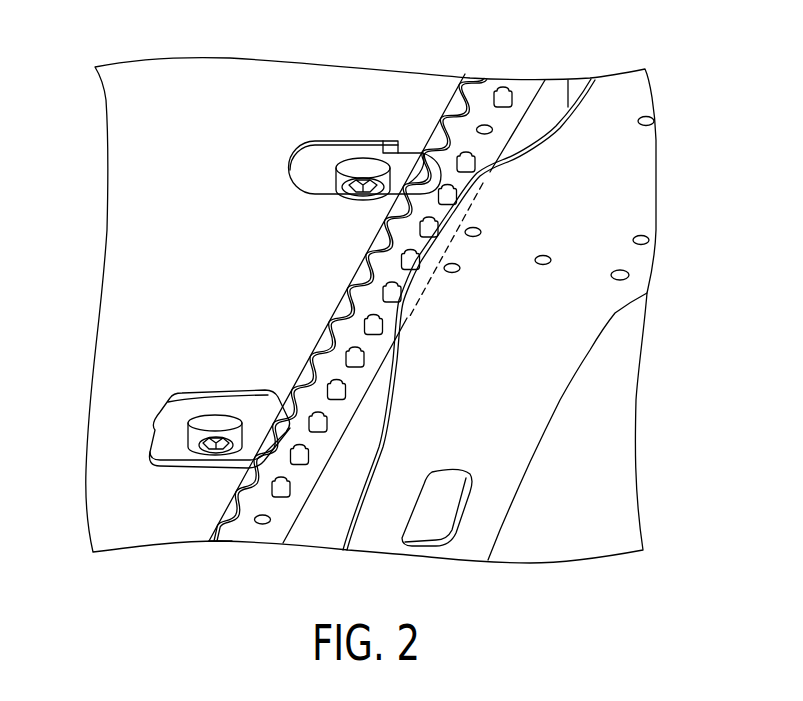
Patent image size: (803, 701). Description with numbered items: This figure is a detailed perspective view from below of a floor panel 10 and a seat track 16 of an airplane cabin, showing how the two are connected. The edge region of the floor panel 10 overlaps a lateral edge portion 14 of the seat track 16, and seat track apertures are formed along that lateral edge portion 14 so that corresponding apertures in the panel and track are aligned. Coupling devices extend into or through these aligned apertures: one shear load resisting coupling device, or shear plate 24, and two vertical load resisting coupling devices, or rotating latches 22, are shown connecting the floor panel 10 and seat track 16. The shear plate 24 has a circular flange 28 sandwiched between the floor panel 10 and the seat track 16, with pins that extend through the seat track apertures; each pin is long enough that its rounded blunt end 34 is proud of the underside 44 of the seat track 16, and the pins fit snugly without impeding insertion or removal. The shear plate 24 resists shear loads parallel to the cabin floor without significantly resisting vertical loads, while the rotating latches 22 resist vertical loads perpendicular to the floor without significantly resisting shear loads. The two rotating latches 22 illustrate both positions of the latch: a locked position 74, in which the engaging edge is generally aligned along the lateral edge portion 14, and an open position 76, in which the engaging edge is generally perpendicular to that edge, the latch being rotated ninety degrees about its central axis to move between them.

The floor panel 10 is at (172, 85).
The lateral edge portion 14 is at (260, 537).
The seat track 16 is at (536, 433).
The vertical load resisting coupling device 22 is at (262, 170).
The shear load resisting coupling device 24 is at (308, 324).
The circular flange 28 is at (318, 363).
The rounded blunt end 34 is at (282, 487).
The underside 44 is at (224, 558).
The locked position 74 is at (356, 100).
The open position 76 is at (125, 428).